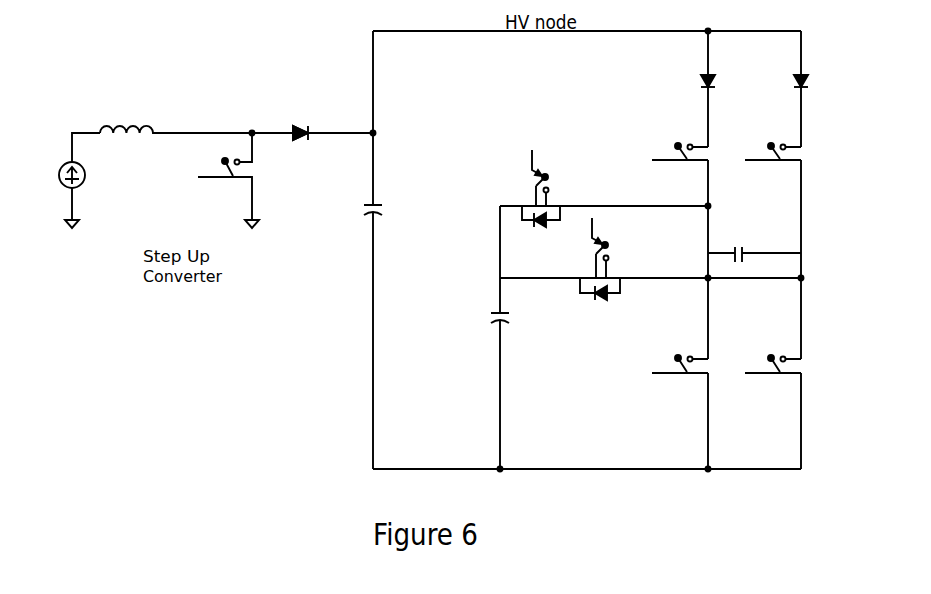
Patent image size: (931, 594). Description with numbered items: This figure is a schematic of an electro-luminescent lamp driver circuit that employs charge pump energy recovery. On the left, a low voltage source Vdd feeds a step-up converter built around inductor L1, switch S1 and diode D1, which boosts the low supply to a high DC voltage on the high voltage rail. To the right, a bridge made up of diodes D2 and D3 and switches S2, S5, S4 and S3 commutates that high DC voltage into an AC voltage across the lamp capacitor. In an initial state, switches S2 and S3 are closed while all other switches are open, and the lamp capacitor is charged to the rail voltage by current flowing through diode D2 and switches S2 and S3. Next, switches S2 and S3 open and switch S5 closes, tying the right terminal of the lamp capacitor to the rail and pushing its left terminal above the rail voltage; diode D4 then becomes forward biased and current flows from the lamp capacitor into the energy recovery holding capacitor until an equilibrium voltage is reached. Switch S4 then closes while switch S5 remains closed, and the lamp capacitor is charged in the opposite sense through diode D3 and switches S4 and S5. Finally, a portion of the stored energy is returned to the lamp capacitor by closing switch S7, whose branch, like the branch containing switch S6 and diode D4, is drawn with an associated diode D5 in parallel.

The supply voltage source Vdd is at (58, 180).
The inductor L1 is at (176, 118).
The switch S1 is at (228, 180).
The diode D1 is at (312, 121).
The switch S6 is at (558, 178).
The diode D4 is at (539, 225).
The switch S7 is at (617, 248).
The diode D5 is at (600, 305).
The diode D2 is at (691, 74).
The diode D3 is at (783, 74).
The switch S2 is at (680, 138).
The switch S5 is at (773, 138).
The switch S4 is at (680, 351).
The switch S3 is at (773, 351).